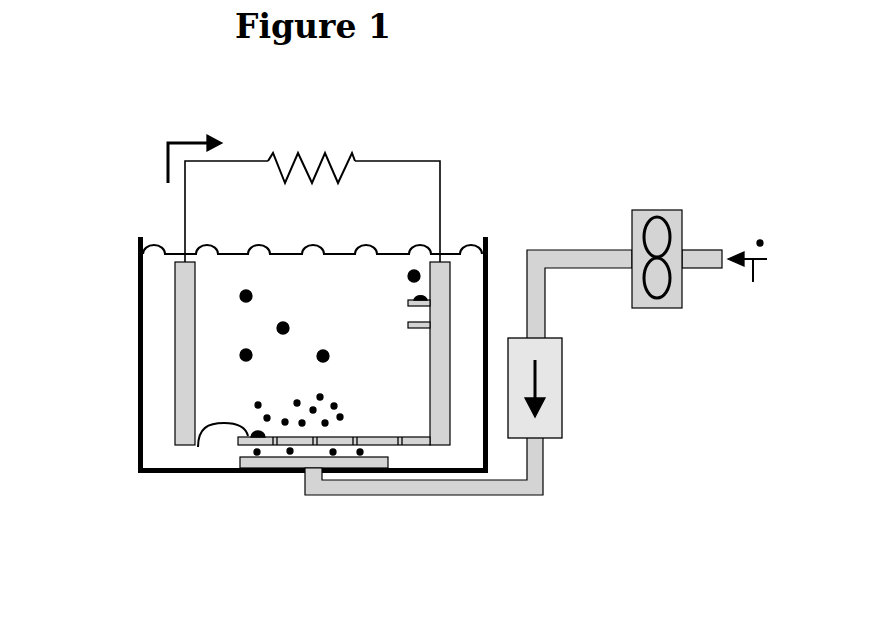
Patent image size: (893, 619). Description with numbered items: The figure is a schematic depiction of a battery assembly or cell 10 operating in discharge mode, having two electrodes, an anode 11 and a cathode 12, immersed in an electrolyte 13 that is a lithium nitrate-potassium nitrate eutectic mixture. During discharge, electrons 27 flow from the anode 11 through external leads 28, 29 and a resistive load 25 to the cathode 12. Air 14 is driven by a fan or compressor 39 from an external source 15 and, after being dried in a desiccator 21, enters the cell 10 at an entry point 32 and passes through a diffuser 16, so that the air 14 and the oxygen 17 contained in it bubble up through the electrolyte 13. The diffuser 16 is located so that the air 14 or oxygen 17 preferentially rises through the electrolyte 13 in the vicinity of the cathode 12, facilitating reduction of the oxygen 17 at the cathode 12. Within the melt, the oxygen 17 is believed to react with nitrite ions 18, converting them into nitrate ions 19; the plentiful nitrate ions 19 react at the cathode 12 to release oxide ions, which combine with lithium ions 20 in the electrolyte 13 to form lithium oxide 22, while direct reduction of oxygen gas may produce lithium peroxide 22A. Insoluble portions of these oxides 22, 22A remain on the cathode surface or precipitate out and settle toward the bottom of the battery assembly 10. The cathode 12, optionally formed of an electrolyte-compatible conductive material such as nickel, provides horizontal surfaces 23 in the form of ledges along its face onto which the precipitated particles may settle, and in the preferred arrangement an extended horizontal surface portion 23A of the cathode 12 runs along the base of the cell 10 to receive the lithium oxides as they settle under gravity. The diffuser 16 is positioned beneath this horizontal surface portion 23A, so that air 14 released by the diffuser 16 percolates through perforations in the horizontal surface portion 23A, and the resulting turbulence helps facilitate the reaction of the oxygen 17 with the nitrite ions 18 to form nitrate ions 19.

The battery assembly 10 is at (138, 354).
The anode 11 is at (175, 393).
The cathode 12 is at (441, 272).
The electrolyte 13 is at (289, 328).
The air 14 is at (277, 410).
The external source 15 is at (758, 242).
The diffuser 16 is at (262, 470).
The oxygen 17 is at (336, 405).
The nitrite ions 18 is at (252, 355).
The nitrate ions 19 is at (329, 356).
The lithium ions 20 is at (408, 276).
The desiccator 21 is at (562, 425).
The lithium oxide 22 is at (255, 433).
The lithium peroxide 22A is at (252, 296).
The horizontal surfaces 23 is at (430, 322).
The extended horizontal surface portion 23A is at (218, 444).
The resistive load 25 is at (332, 179).
The electrons 27 is at (166, 152).
The external lead 28 is at (185, 207).
The external lead 29 is at (440, 163).
The entry point 32 is at (303, 477).
The fan or compressor 39 is at (632, 223).